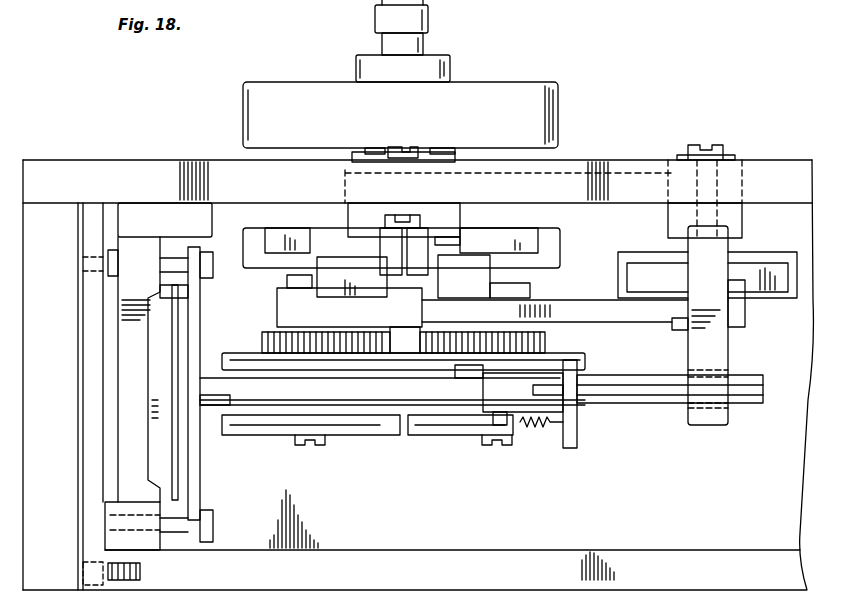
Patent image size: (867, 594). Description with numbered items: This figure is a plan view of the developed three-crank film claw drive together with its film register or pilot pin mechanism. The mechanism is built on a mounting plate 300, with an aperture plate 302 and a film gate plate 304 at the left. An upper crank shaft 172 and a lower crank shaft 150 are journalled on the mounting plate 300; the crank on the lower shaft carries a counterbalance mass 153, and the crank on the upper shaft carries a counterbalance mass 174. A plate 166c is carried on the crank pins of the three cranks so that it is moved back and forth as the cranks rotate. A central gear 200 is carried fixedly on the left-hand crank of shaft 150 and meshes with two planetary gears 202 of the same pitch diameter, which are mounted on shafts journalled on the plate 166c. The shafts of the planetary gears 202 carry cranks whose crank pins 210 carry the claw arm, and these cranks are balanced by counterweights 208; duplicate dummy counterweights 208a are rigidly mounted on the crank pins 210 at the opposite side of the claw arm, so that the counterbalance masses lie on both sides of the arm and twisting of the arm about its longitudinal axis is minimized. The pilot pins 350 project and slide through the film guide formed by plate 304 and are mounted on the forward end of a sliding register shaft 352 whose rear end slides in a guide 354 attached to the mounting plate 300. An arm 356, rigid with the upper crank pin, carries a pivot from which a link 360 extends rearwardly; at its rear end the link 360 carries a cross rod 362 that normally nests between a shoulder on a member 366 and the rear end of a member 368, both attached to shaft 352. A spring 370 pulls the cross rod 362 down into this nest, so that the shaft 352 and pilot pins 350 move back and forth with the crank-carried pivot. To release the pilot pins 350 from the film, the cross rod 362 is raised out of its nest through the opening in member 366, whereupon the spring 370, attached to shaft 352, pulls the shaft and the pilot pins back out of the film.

The crank shaft 150 is at (720, 143).
The counterbalance mass 153 is at (770, 258).
The plate 166c is at (285, 308).
The crank shaft 172 is at (420, 147).
The counterbalance mass 174 is at (480, 258).
The gear 200 is at (440, 330).
The planetary gear 202 is at (265, 338).
The counterweight 208 is at (242, 358).
The dummy counterweight 208a is at (248, 435).
The crank pin 210 is at (315, 445).
The mounting plate 300 is at (272, 200).
The aperture plate 302 is at (60, 466).
The film gate plate 304 is at (97, 213).
The pilot pin 350 is at (172, 258).
The sliding register shaft 352 is at (383, 395).
The guide 354 is at (722, 350).
The arm 356 is at (410, 345).
The link 360 is at (480, 365).
The cross rod 362 is at (578, 440).
The member 366 is at (580, 391).
The member 368 is at (515, 401).
The spring 370 is at (540, 427).